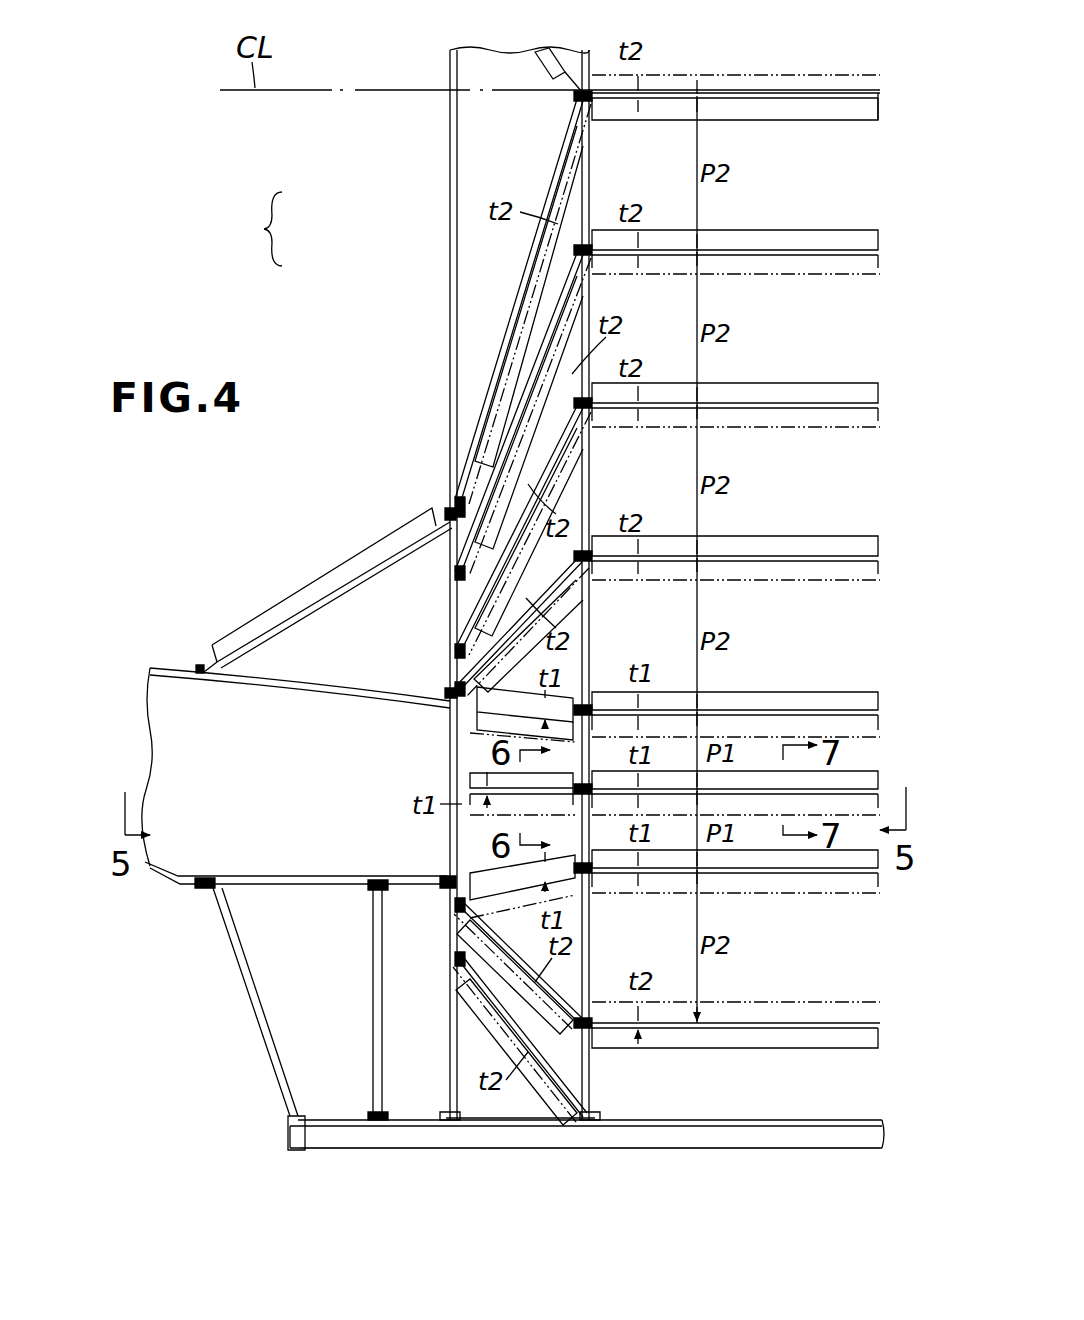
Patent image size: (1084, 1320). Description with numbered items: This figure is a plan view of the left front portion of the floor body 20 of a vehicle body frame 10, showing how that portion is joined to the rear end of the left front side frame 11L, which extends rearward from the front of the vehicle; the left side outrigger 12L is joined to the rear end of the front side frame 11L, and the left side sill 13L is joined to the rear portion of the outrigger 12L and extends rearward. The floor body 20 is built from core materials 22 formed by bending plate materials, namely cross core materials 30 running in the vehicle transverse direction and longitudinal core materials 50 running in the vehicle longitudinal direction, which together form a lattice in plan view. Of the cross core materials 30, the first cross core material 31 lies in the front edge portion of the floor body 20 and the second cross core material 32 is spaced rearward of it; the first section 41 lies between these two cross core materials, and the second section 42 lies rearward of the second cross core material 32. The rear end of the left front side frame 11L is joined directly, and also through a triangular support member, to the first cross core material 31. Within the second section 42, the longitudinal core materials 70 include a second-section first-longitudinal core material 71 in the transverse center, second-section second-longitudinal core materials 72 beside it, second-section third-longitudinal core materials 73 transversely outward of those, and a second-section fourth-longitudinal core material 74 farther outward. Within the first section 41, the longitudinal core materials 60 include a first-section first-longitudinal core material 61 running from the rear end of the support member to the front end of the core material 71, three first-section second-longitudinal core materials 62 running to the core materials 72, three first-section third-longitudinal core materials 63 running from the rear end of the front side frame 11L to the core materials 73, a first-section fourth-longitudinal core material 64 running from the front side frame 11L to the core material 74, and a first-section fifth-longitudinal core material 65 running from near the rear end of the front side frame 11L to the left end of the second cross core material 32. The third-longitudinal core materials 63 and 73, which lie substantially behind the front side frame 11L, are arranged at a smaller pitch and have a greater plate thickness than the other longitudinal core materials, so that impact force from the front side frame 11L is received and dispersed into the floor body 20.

The body frame 10 is at (670, 1187).
The left front side frame 11L is at (166, 692).
The left side outrigger 12L is at (272, 992).
The left side sill 13L is at (862, 1137).
The floor body 20 is at (414, 55).
The core materials 22 is at (254, 229).
The cross core materials 30 is at (440, 224).
The first cross core material 31 is at (446, 131).
The second cross core material 32 is at (565, 170).
The first section 41 is at (508, 75).
The second section 42 is at (788, 63).
The longitudinal core materials 50 is at (490, 272).
The longitudinal core materials 60 is at (490, 332).
The first-section first-longitudinal core material 61 is at (545, 362).
The first-section second-longitudinal core materials 62 is at (520, 652).
The first-section third-longitudinal core materials 63 is at (458, 732).
The first-section fourth-longitudinal core material 64 is at (456, 944).
The first-section fifth-longitudinal core material 65 is at (456, 1030).
The longitudinal core materials 70 is at (882, 107).
The second-section first-longitudinal core material 71 is at (862, 122).
The second-section second-longitudinal core materials 72 is at (862, 270).
The second-section third-longitudinal core materials 73 is at (845, 710).
The second-section fourth-longitudinal core material 74 is at (862, 1042).